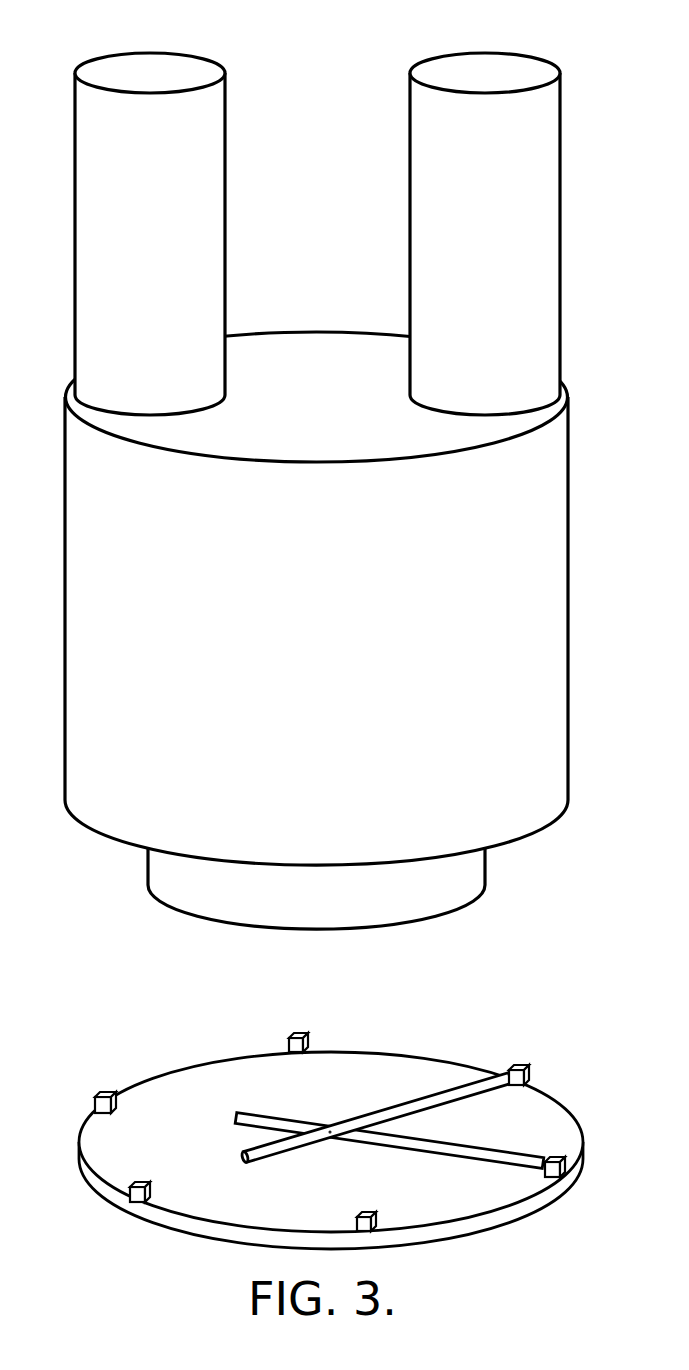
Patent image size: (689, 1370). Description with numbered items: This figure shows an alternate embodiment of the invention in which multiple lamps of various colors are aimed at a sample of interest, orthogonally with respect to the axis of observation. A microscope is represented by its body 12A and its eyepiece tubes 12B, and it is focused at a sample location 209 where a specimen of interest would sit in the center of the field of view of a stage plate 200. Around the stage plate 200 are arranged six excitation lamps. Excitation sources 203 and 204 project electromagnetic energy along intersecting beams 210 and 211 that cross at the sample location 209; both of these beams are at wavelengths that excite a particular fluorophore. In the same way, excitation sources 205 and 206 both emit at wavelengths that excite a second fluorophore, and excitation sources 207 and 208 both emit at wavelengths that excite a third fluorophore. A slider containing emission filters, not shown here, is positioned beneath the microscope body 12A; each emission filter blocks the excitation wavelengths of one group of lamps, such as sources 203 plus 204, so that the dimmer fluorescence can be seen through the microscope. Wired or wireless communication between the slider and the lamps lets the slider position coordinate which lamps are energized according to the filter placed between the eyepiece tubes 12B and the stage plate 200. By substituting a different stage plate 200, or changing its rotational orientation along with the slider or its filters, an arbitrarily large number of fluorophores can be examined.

The microscope body 12A is at (338, 756).
The eyepiece tubes 12B is at (176, 238).
The stage plate 200 is at (343, 1211).
The excitation source 203 is at (512, 1046).
The excitation source 204 is at (535, 1146).
The excitation source 205 is at (390, 1209).
The excitation source 206 is at (140, 1168).
The excitation source 207 is at (83, 1085).
The excitation source 208 is at (320, 1026).
The sample location 209 is at (330, 1109).
The intersecting beam 210 is at (222, 1103).
The intersecting beam 211 is at (232, 1167).